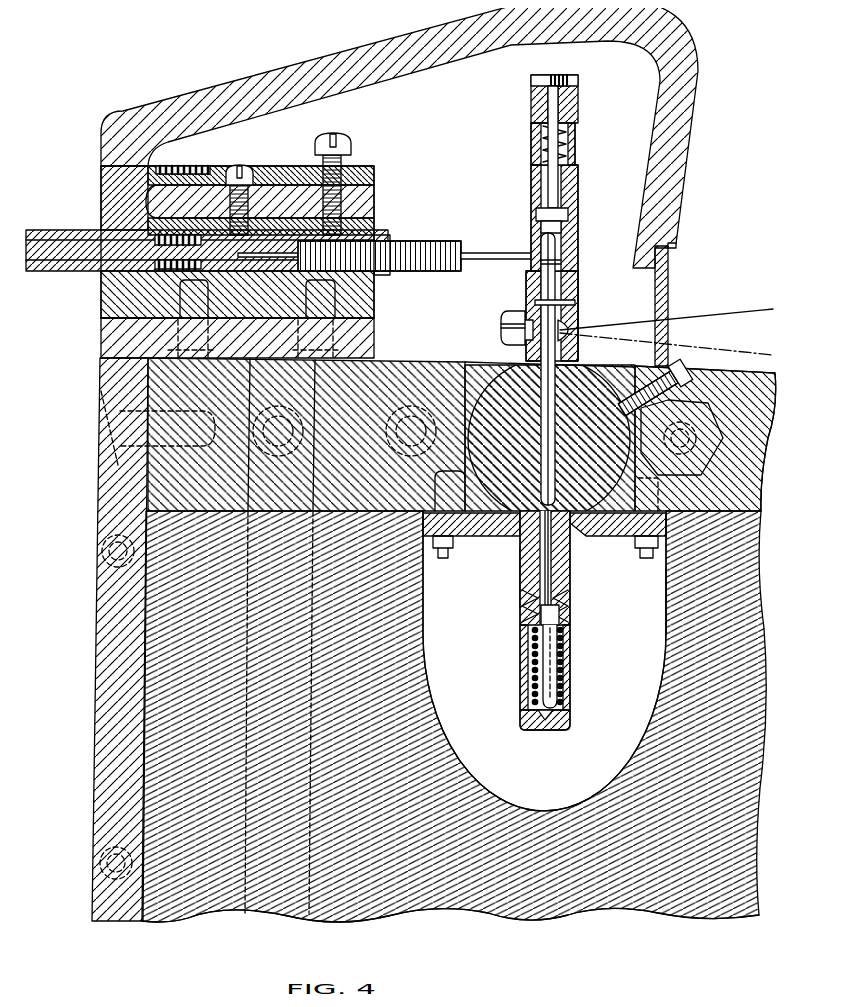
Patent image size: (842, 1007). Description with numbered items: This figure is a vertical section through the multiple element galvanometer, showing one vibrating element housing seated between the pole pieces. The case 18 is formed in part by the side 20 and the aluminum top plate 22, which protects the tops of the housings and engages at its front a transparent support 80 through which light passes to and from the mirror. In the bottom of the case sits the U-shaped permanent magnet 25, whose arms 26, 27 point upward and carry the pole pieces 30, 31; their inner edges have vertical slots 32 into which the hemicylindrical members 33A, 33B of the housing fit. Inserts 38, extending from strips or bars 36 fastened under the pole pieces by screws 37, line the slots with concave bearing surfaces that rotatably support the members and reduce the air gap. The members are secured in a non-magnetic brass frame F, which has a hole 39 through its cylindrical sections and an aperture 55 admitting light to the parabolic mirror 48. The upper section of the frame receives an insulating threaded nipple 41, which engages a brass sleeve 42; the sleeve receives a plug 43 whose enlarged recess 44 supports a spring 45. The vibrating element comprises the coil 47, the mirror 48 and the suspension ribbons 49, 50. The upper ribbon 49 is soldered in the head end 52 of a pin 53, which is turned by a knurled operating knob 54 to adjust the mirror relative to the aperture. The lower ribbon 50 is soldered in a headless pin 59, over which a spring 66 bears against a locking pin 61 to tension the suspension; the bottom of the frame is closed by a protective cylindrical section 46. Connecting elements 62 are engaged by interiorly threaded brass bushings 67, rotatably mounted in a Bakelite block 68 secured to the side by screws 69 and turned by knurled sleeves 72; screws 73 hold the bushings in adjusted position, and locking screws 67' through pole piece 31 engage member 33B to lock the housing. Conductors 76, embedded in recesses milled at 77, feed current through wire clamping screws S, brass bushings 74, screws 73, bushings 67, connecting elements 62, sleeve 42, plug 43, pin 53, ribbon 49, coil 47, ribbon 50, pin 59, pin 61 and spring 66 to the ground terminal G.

The top plate 22 is at (688, 59).
The conductors 76 is at (669, 236).
The transparent support 80 is at (661, 271).
The Bakelite block 68 is at (93, 172).
The brass bushings 74 is at (368, 194).
The milled recesses 77 is at (168, 157).
The wire clamping screws S is at (240, 157).
The screws 73 is at (340, 127).
The sleeves 72 is at (62, 265).
The threaded brass bushings 67 is at (379, 243).
The connecting elements 62 is at (505, 246).
The screws 69 is at (173, 321).
The case 18 is at (91, 511).
The side 20 is at (88, 654).
The pole piece 30 is at (372, 350).
The vertical slots 32 is at (470, 357).
The ground terminal G is at (752, 410).
The pole piece 31 is at (737, 364).
The locking screws 67' is at (671, 387).
The coil 47 is at (572, 357).
The plug 43 is at (571, 158).
The spring 45 is at (570, 128).
The enlarged recess 44 is at (524, 141).
The operating knob 54 is at (576, 100).
The pin 53 is at (545, 173).
The head end 52 is at (570, 204).
The sleeve 42 is at (568, 225).
The suspension ribbon 49 is at (552, 237).
The threaded nipple 41 is at (571, 257).
The parabolic mirror 48 is at (571, 298).
The hemicylindrical member 33A is at (492, 326).
The aperture 55 is at (572, 321).
The hemicylindrical member 33B is at (640, 358).
The frame F is at (573, 275).
The inserts 38 is at (470, 529).
The strips or bars 36 is at (467, 531).
The screws 37 is at (429, 548).
The cylindrical section 46 is at (564, 654).
The headless pin 59 is at (565, 617).
The hole 39 is at (546, 553).
The suspension ribbon 50 is at (548, 574).
The spring 66 is at (550, 673).
The locking pin 61 is at (554, 698).
The arm 26 is at (417, 673).
The arm 27 is at (657, 687).
The permanent magnet 25 is at (503, 900).